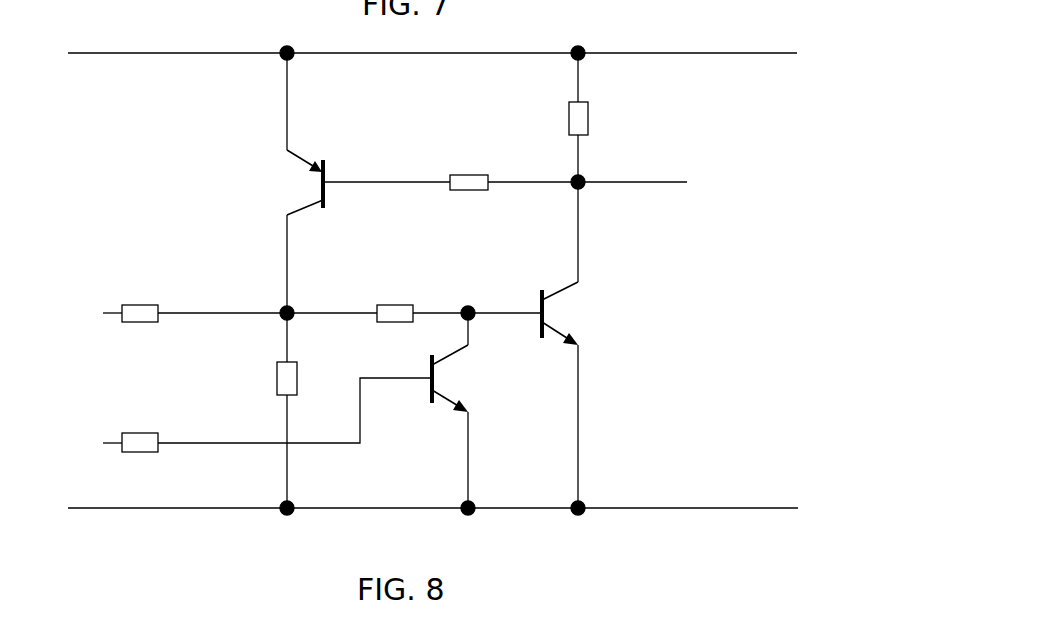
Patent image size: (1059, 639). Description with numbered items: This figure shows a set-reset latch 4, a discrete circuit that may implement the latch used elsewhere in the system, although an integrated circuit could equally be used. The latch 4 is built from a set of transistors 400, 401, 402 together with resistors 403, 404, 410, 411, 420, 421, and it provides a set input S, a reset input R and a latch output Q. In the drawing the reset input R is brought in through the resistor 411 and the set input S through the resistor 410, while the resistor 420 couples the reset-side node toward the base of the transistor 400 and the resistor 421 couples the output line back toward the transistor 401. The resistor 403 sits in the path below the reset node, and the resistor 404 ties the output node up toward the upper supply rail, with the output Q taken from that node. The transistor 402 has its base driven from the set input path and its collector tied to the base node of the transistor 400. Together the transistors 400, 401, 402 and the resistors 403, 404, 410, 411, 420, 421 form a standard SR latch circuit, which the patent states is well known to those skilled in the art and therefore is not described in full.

The set-reset latch 4 is at (682, 31).
The transistor 400 is at (565, 288).
The transistor 401 is at (306, 199).
The transistor 402 is at (455, 354).
The resistor 403 is at (277, 392).
The resistor 404 is at (588, 133).
The resistor 410 is at (128, 452).
The resistor 411 is at (138, 305).
The resistor 420 is at (400, 305).
The resistor 421 is at (455, 191).